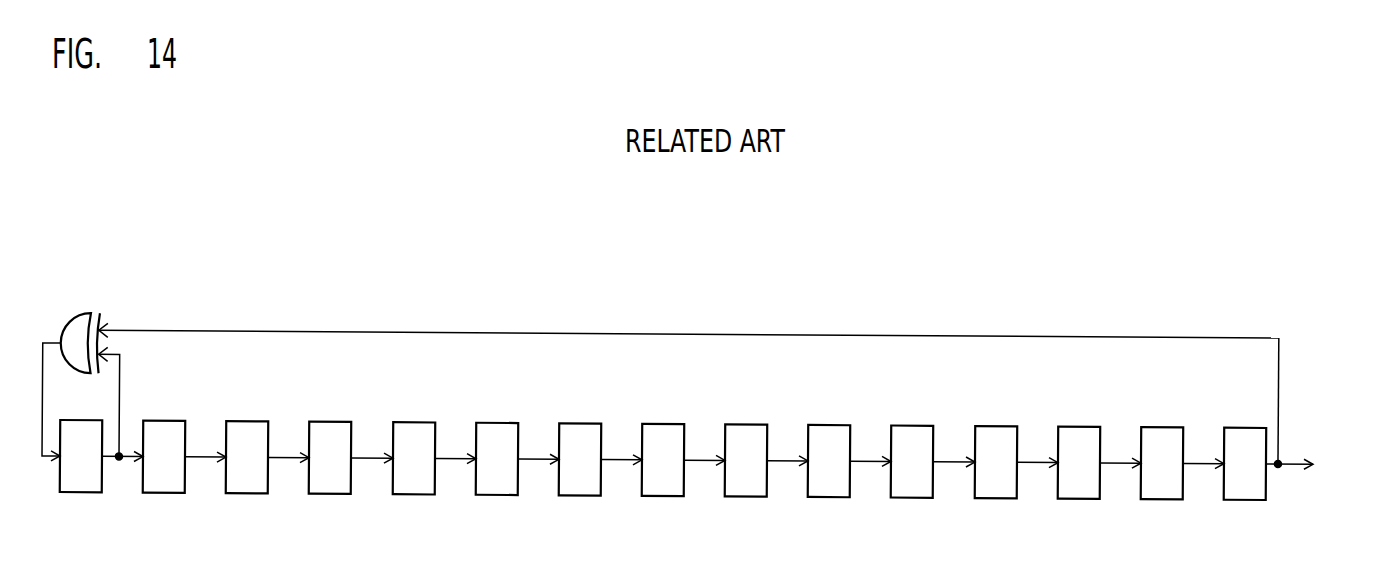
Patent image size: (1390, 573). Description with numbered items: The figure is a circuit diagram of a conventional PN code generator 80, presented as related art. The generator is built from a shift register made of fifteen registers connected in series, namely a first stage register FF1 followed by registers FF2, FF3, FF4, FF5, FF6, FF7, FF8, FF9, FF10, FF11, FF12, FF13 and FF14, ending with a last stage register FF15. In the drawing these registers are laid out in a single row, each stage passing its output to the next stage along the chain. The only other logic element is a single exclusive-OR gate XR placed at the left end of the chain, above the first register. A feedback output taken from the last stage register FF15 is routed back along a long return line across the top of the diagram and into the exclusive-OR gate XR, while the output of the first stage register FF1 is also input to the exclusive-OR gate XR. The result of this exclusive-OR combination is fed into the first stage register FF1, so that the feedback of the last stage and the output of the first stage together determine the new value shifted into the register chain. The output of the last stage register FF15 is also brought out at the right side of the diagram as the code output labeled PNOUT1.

The PN code generator 80 is at (728, 305).
The exclusive-OR gate XR is at (78, 310).
The PN code output PNOUT1 is at (1317, 478).
The first stage register FF1 is at (81, 456).
The register FF2 is at (164, 457).
The register FF3 is at (247, 457).
The register FF4 is at (330, 458).
The register FF5 is at (414, 458).
The register FF6 is at (497, 459).
The register FF7 is at (580, 459).
The register FF8 is at (663, 460).
The register FF9 is at (746, 460).
The register FF10 is at (829, 461).
The register FF11 is at (912, 462).
The register FF12 is at (996, 462).
The register FF13 is at (1079, 463).
The register FF14 is at (1162, 463).
The last stage register FF15 is at (1245, 464).